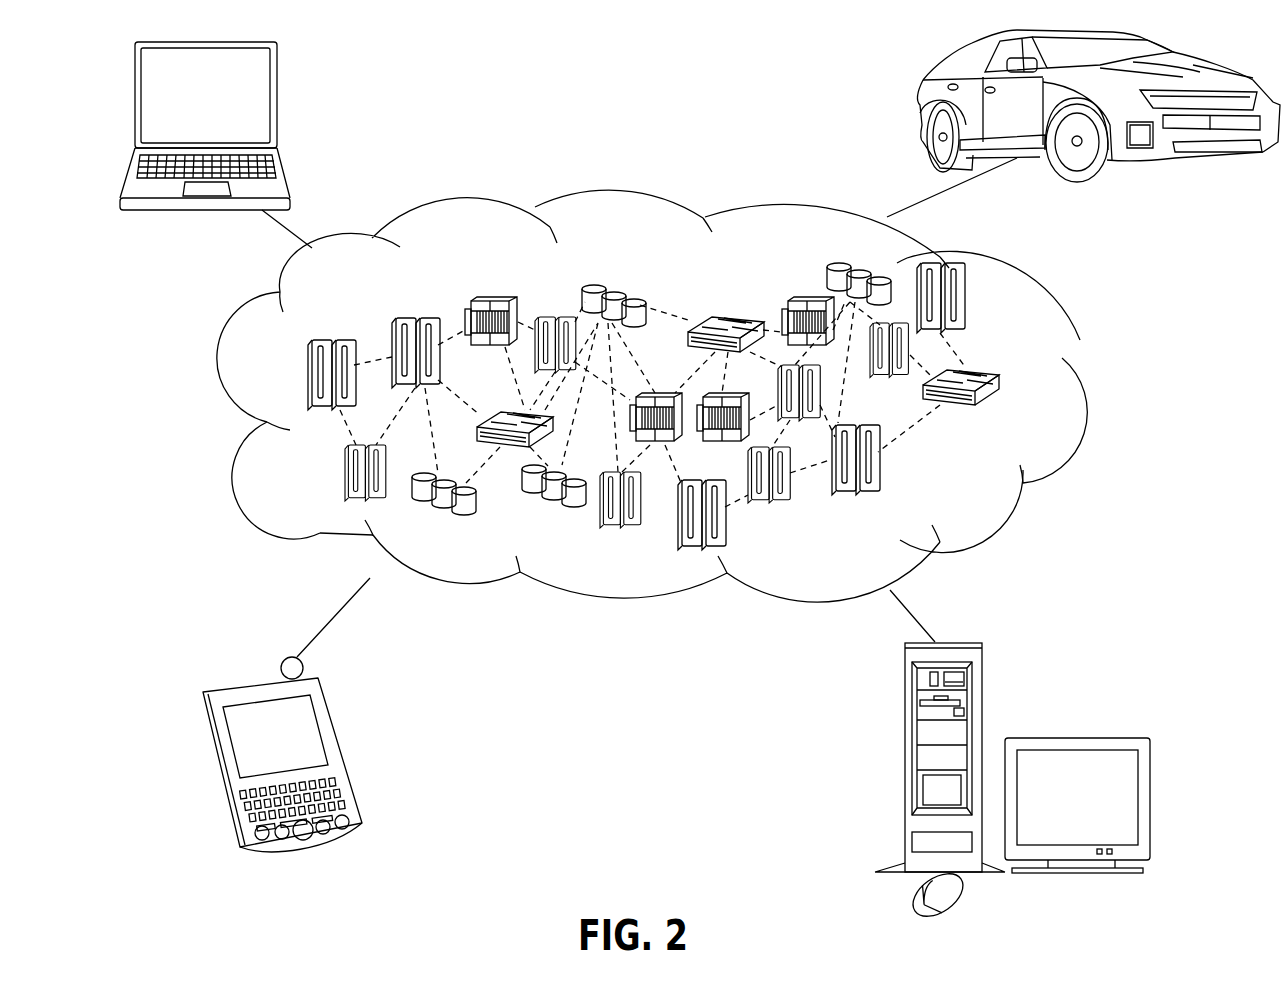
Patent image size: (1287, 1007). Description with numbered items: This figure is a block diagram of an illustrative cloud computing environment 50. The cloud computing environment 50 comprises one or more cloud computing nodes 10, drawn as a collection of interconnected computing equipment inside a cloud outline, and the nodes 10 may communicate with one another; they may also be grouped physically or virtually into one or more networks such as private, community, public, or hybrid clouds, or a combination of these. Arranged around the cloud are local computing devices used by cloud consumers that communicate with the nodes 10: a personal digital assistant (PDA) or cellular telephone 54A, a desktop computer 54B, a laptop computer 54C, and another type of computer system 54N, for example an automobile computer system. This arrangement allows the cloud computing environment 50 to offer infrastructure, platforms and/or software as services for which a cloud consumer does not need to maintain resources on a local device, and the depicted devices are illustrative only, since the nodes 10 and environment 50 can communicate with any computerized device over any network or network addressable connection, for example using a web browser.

The cloud computing node 10 is at (980, 490).
The cloud computing environment 50 is at (1079, 388).
The personal digital assistant (PDA) or cellular telephone 54A is at (333, 718).
The desktop computer 54B is at (905, 703).
The laptop computer 54C is at (277, 80).
The other type of computer system 54N is at (920, 95).